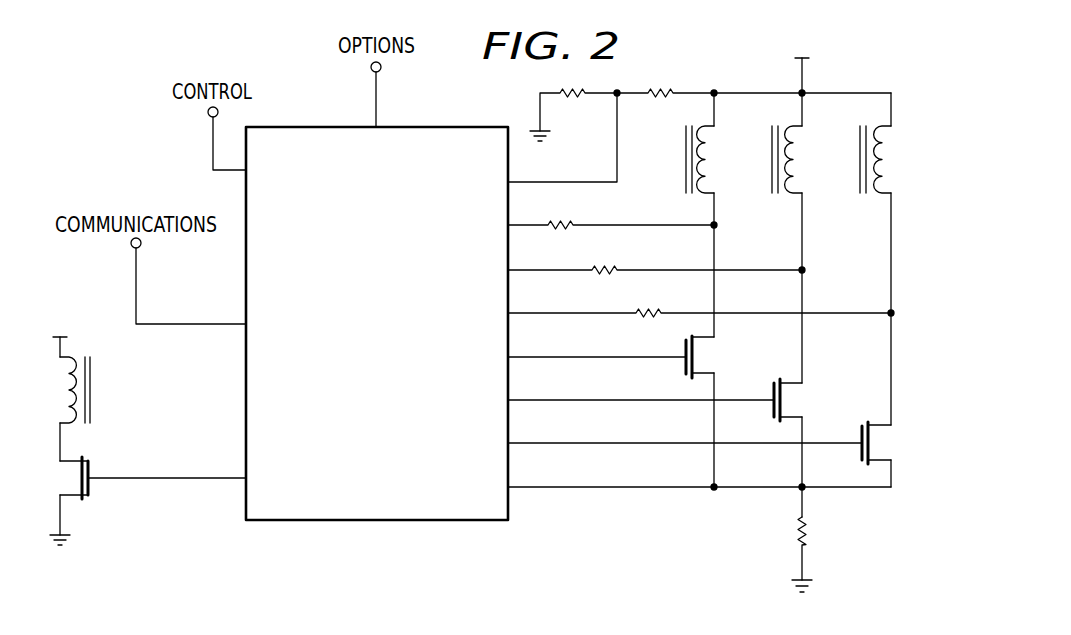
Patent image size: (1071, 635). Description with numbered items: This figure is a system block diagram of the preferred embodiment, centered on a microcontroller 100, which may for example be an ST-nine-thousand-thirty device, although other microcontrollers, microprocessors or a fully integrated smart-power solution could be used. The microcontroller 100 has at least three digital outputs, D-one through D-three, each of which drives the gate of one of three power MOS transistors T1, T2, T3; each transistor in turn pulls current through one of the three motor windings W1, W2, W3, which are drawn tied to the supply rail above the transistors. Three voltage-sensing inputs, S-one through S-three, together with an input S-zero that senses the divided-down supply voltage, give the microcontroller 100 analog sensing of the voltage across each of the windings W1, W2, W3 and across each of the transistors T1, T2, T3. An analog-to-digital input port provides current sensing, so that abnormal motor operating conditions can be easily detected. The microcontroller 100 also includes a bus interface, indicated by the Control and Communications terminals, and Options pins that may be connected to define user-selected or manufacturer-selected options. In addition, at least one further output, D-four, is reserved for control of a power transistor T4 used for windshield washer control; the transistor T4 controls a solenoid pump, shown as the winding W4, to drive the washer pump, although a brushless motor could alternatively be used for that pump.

The microcontroller 100 is at (399, 348).
The motor winding W1 is at (684, 143).
The motor winding W2 is at (772, 143).
The motor winding W3 is at (860, 143).
The winding W4 is at (87, 380).
The power MOS transistor T1 is at (618, 357).
The power MOS transistor T2 is at (662, 400).
The power MOS transistor T3 is at (706, 443).
The power transistor T4 is at (146, 484).